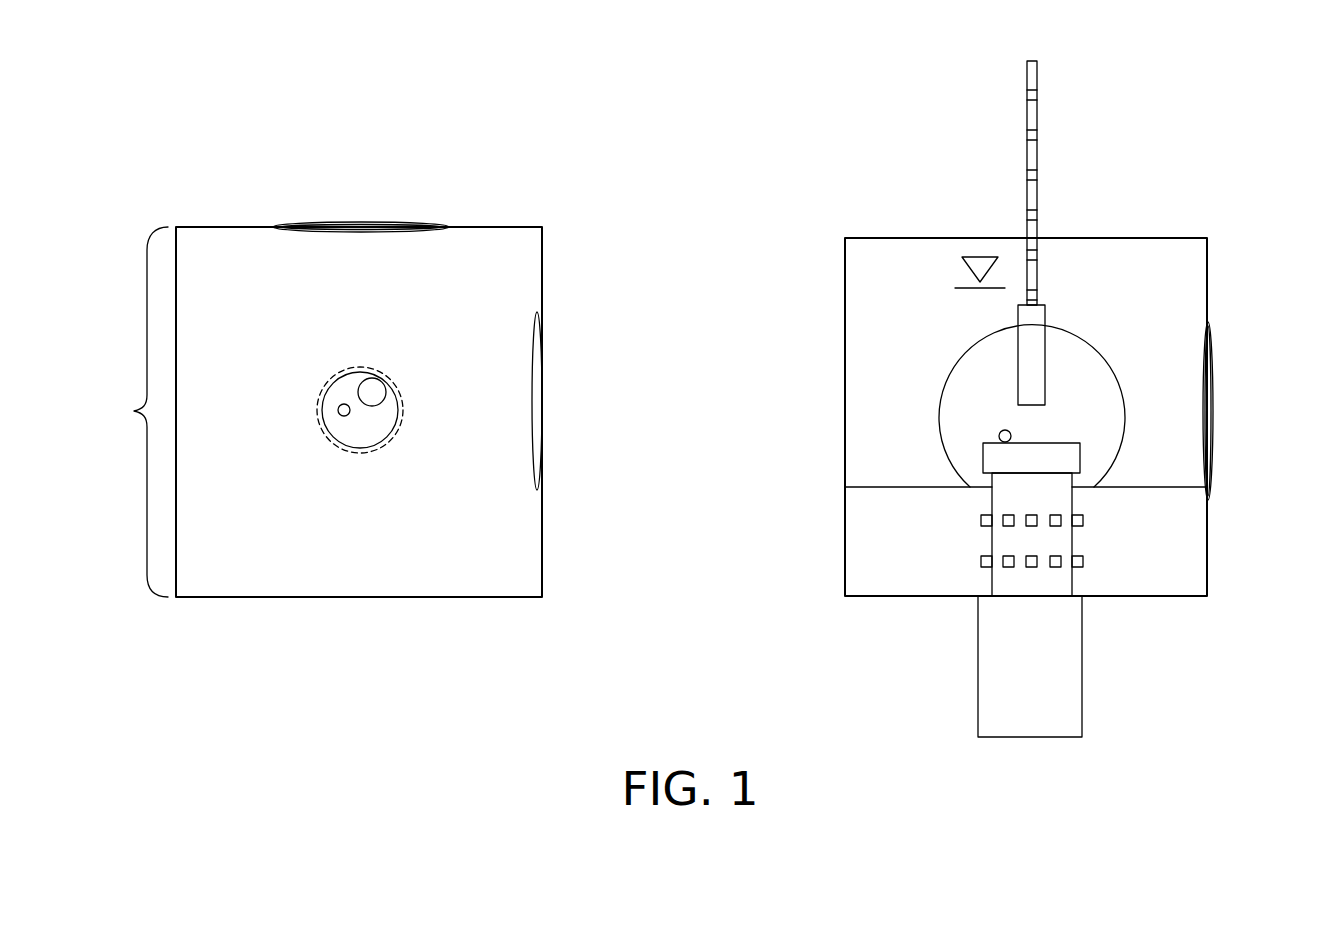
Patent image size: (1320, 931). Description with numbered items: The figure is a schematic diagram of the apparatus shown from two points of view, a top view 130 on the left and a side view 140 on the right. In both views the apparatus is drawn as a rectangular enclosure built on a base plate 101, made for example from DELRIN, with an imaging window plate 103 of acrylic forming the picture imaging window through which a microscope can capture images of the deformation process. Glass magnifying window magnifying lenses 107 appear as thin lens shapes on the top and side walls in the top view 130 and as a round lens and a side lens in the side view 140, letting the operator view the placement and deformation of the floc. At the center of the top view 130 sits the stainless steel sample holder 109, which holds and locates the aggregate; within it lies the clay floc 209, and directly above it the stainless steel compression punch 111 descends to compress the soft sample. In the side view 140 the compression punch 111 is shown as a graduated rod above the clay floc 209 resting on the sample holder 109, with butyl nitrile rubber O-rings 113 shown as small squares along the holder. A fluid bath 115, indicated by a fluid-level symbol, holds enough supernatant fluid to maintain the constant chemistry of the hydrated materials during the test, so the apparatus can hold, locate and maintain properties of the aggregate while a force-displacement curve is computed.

The base plate 101 is at (263, 577).
The imaging window plate 103 is at (134, 411).
The magnifying window magnifying lens 107 is at (327, 223).
The sample holder 109 is at (360, 433).
The compression punch 111 is at (373, 378).
The O-rings 113 is at (394, 444).
The fluid bath 115 is at (968, 273).
The top view 130 is at (395, 186).
The side view 140 is at (974, 196).
The clay floc 209 is at (338, 410).